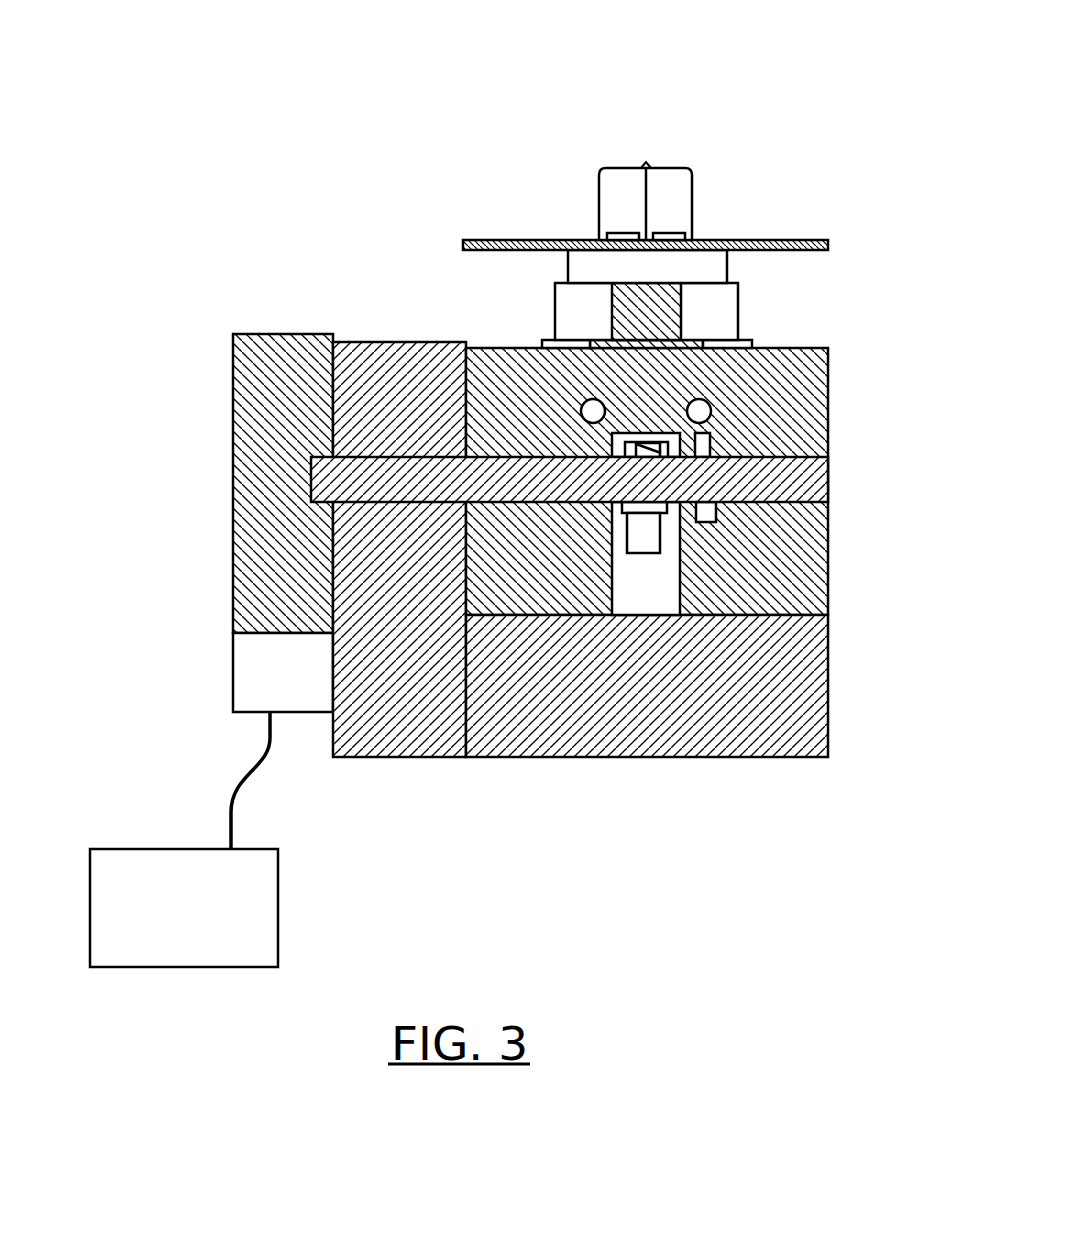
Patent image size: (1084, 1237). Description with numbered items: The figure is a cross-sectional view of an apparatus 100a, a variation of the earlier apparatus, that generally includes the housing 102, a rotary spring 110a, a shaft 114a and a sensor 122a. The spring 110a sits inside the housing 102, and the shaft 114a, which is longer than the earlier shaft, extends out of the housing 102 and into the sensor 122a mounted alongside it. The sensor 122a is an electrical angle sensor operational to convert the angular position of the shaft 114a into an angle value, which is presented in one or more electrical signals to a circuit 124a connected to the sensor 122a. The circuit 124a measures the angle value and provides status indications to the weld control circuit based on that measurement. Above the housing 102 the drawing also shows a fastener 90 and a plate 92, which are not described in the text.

The apparatus 100a is at (430, 33).
The fastener nut 90 is at (673, 168).
The mounting plate 92 is at (797, 238).
The housing 102 is at (828, 362).
The spring 110a is at (708, 447).
The shaft 114a is at (830, 482).
The sensor 122a is at (272, 333).
The circuit 124a is at (150, 849).